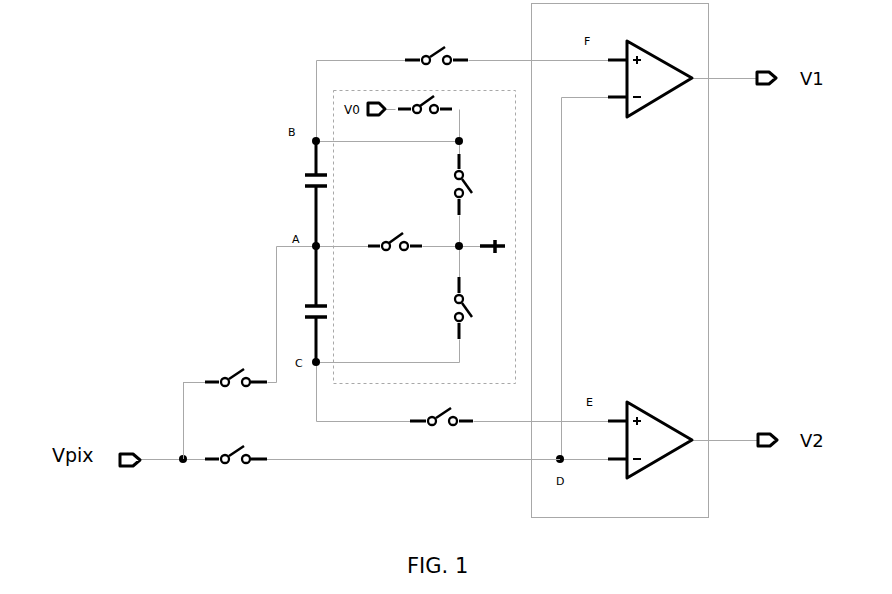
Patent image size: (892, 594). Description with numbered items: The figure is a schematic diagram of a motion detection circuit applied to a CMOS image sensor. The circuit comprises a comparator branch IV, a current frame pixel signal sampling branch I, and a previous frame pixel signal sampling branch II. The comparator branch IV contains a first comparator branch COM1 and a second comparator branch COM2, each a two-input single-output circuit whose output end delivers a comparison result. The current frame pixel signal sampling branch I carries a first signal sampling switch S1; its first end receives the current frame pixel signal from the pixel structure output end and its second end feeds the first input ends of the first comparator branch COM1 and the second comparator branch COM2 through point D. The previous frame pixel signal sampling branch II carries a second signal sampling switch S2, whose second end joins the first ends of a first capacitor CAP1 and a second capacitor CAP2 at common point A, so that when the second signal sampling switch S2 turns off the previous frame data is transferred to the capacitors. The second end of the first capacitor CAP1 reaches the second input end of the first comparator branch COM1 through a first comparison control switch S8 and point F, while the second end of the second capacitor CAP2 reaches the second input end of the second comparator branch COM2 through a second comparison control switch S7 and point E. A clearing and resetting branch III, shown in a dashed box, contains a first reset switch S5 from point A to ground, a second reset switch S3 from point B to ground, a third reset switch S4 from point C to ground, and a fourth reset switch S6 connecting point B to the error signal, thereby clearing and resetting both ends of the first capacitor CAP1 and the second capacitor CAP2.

The first signal sampling switch S1 is at (236, 470).
The second signal sampling switch S2 is at (236, 392).
The second reset switch S3 is at (450, 184).
The third reset switch S4 is at (450, 308).
The first reset switch S5 is at (395, 254).
The fourth reset switch S6 is at (425, 116).
The second comparison control switch S7 is at (441, 428).
The first comparison control switch S8 is at (436, 50).
The first capacitor CAP1 is at (307, 193).
The second capacitor CAP2 is at (307, 304).
The first comparator branch COM1 is at (650, 79).
The second comparator branch COM2 is at (650, 440).
The current frame pixel signal sampling branch I is at (413, 477).
The previous frame pixel signal sampling branch II is at (171, 420).
The clearing and resetting branch III is at (425, 237).
The comparator branch IV is at (620, 261).